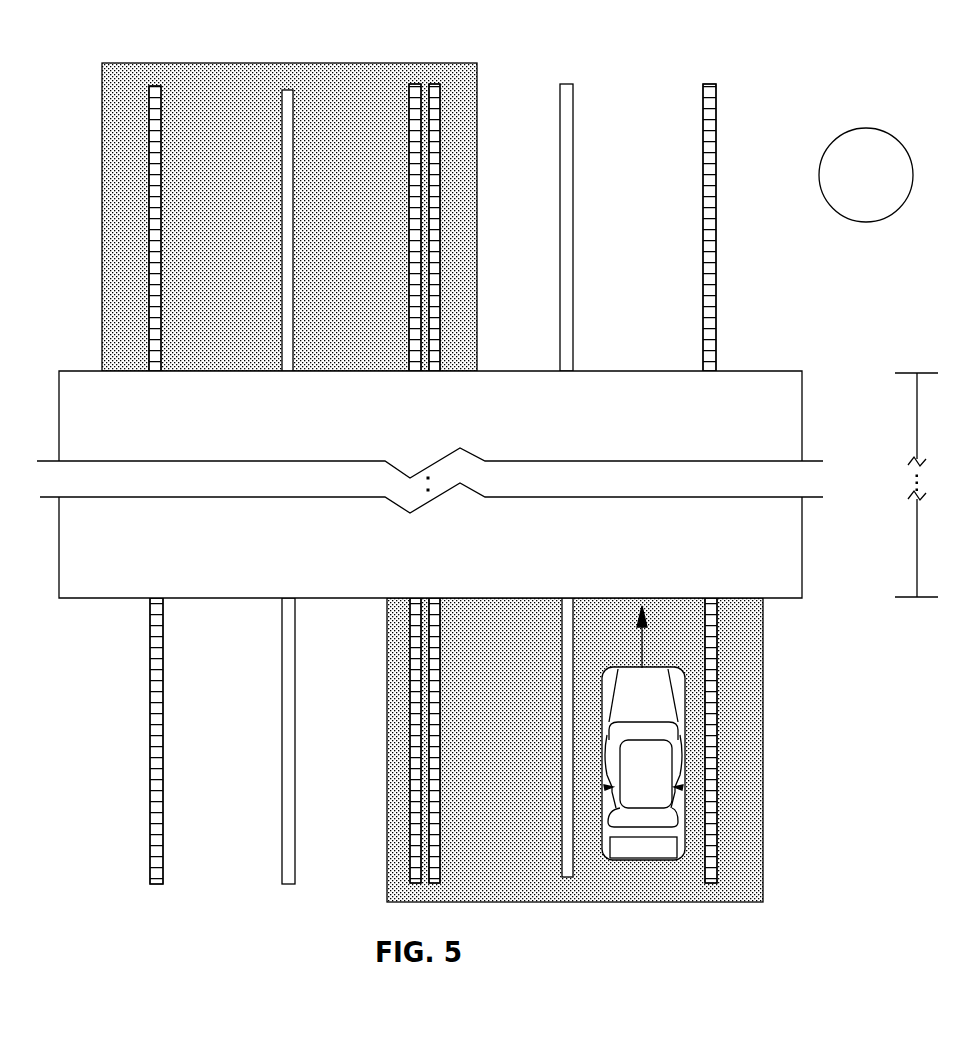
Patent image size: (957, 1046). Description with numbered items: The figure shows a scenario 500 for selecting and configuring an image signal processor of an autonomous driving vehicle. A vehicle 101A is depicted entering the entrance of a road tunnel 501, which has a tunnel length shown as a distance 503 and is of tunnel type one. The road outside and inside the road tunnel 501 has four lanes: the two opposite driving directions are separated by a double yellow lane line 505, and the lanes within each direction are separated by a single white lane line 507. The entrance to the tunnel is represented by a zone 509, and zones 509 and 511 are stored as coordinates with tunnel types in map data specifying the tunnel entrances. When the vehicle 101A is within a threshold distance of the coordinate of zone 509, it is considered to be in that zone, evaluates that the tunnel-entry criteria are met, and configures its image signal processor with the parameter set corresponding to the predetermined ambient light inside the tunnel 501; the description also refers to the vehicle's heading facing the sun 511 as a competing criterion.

The scenario 500 is at (488, 471).
The road tunnel 501 is at (617, 432).
The distance 503 is at (917, 520).
The double yellow lane line 505 is at (440, 715).
The single white lane line 507 is at (285, 790).
The zone 509 is at (515, 646).
The zone 511 is at (229, 102).
The vehicle 101A is at (643, 733).